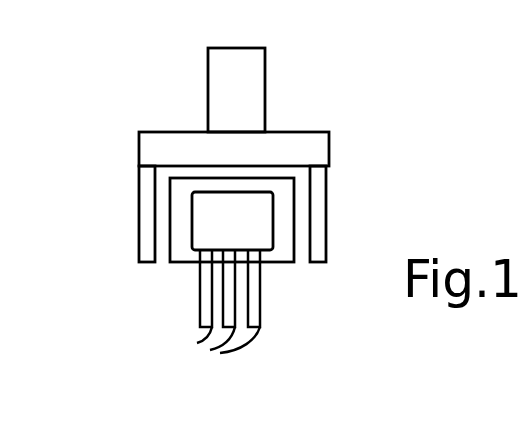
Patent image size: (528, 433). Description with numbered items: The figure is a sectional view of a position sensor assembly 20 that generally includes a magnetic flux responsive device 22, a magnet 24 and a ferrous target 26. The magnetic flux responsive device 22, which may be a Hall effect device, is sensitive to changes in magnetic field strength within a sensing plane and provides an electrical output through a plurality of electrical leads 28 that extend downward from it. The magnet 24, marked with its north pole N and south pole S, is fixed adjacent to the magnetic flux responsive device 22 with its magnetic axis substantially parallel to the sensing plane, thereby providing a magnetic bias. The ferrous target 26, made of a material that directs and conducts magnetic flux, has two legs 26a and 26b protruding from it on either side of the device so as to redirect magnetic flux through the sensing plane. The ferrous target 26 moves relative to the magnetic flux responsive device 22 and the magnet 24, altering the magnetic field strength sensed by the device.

The position sensor assembly 20 is at (333, 113).
The magnetic flux responsive device 22 is at (250, 235).
The magnet 24 is at (273, 263).
The ferrous target 26 is at (139, 151).
The leg 26a is at (139, 213).
The leg 26b is at (326, 214).
The electrical leads 28 is at (220, 353).